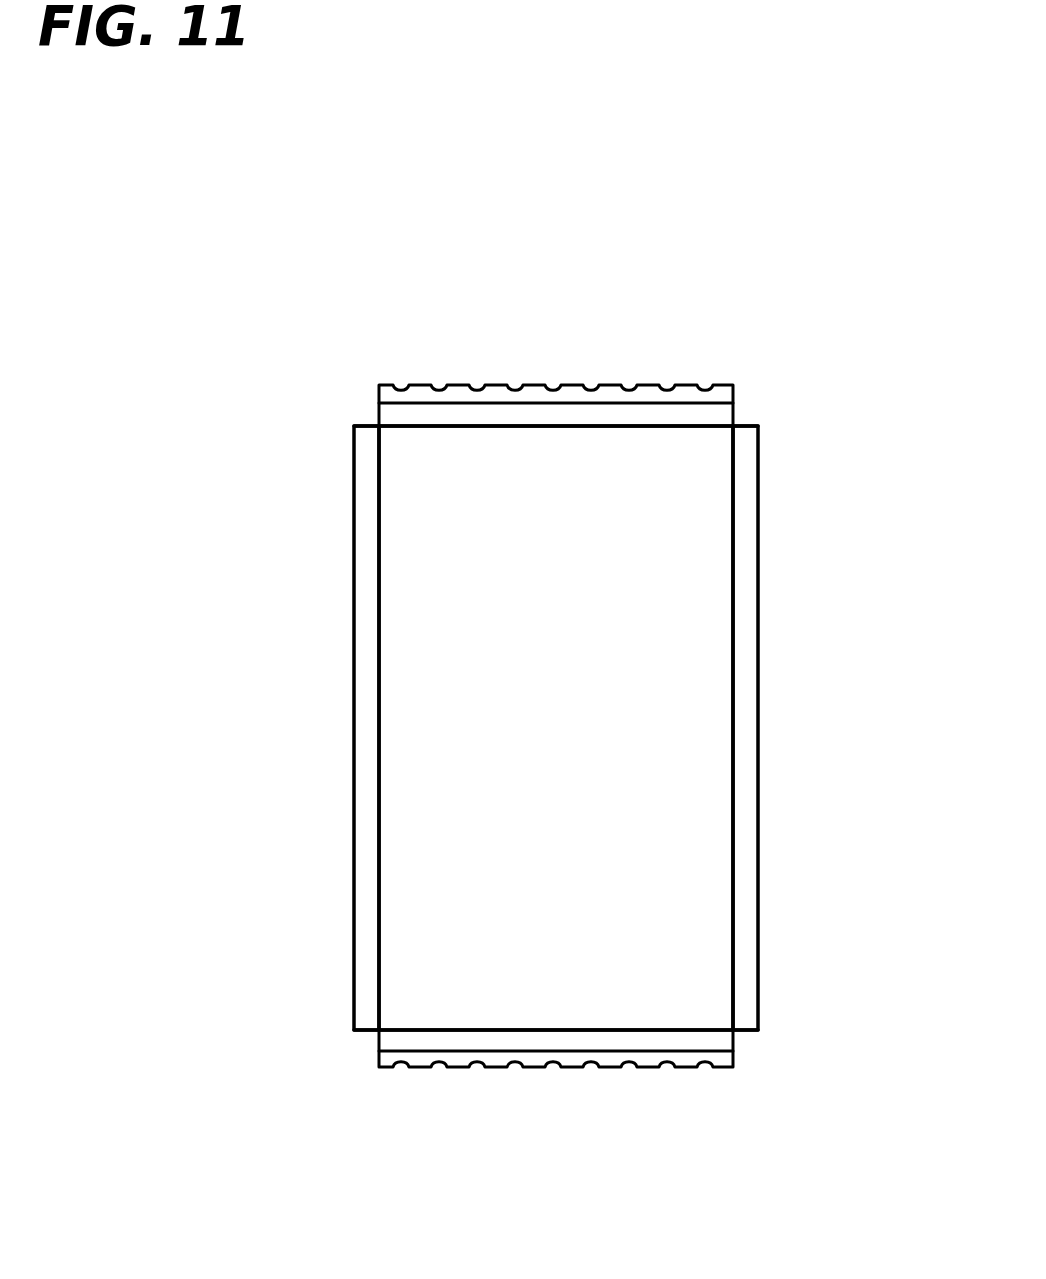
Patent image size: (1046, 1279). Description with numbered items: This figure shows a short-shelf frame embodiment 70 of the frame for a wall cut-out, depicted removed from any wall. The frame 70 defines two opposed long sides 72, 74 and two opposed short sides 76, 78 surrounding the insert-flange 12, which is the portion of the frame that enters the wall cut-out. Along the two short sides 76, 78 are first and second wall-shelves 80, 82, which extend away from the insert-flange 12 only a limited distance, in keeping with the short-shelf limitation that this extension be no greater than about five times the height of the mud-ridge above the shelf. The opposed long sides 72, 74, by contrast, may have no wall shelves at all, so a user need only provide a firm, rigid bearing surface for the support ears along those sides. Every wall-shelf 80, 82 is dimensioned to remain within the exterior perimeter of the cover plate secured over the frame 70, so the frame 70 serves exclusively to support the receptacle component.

The short-shelf frame embodiment 70 is at (799, 384).
The insert-flange 12 is at (407, 1027).
The long side 72 is at (366, 614).
The long side 74 is at (747, 758).
The short side 76 is at (642, 1040).
The short side 78 is at (605, 417).
The first wall-shelf 80 is at (492, 398).
The second wall-shelf 82 is at (552, 1060).